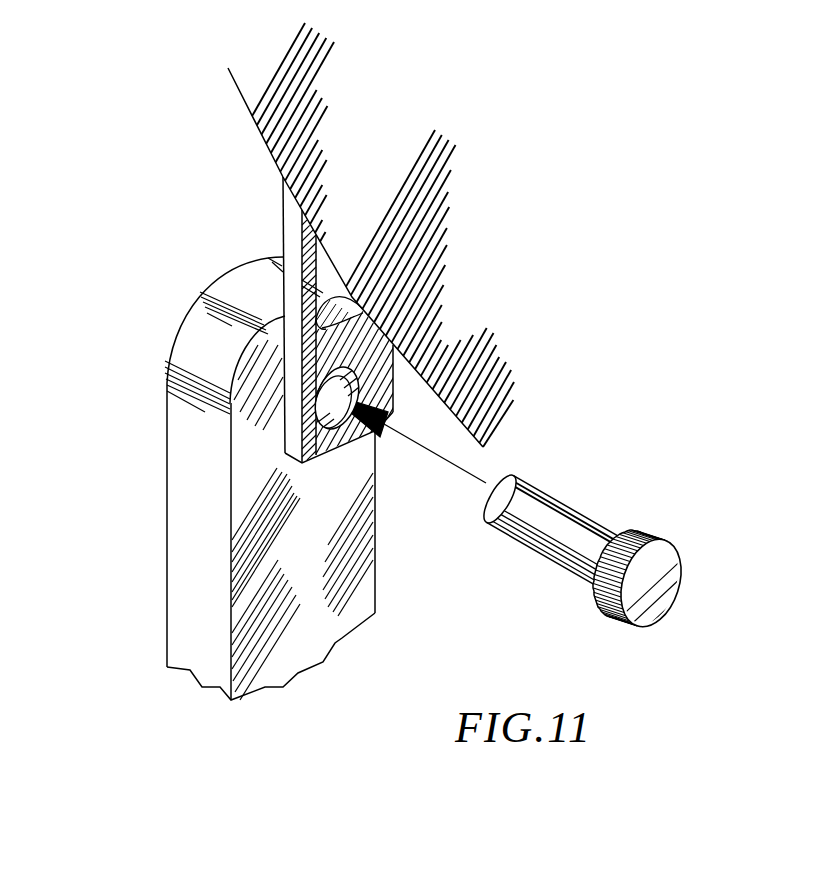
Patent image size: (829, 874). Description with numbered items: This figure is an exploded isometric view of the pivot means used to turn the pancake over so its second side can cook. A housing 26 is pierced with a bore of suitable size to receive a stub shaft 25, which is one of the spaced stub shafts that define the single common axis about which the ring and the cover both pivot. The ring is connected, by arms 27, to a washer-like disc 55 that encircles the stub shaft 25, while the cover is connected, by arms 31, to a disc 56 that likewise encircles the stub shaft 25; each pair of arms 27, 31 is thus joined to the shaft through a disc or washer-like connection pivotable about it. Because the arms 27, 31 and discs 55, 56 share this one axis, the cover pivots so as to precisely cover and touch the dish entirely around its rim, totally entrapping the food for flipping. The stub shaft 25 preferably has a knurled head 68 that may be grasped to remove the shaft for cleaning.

The stub shaft 25 is at (552, 522).
The housing 26 is at (348, 563).
The arms 27 is at (293, 237).
The arms 31 is at (239, 320).
The washer-like disc 55 is at (292, 428).
The disc 56 is at (200, 450).
The knurled knob 68 is at (605, 602).